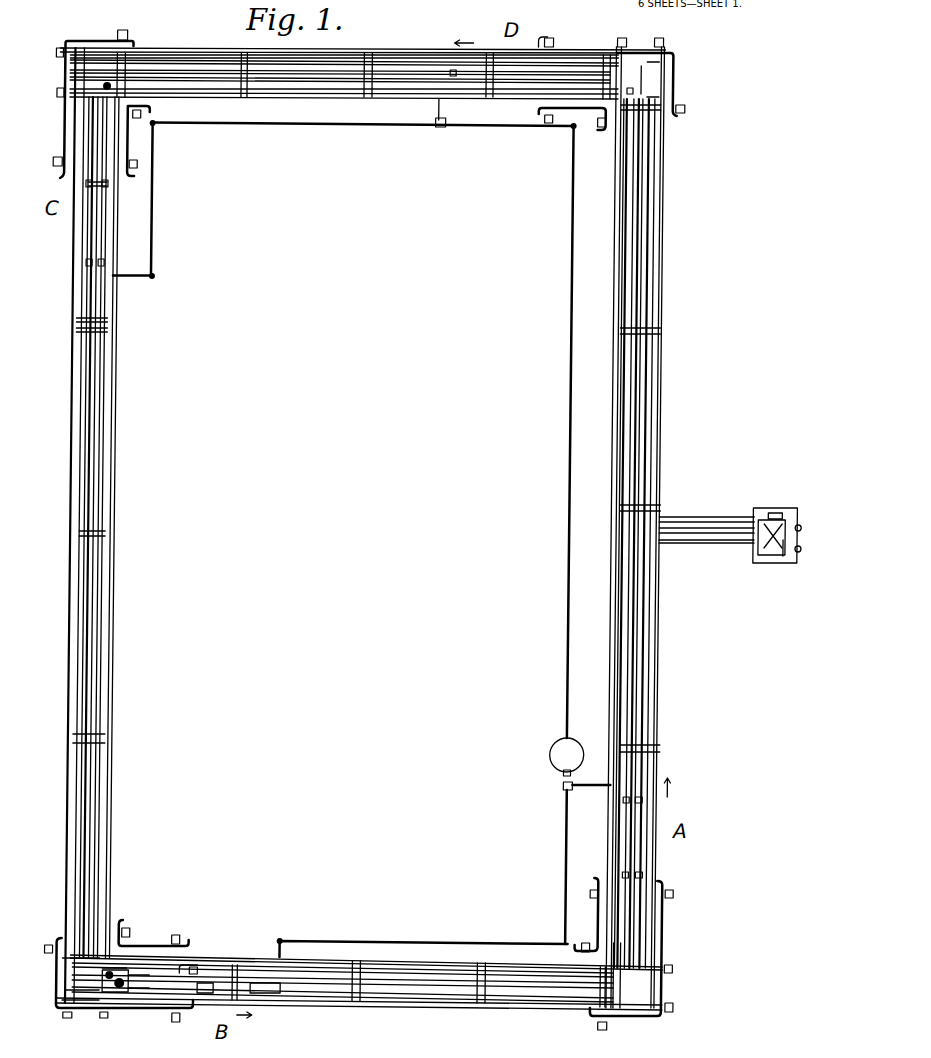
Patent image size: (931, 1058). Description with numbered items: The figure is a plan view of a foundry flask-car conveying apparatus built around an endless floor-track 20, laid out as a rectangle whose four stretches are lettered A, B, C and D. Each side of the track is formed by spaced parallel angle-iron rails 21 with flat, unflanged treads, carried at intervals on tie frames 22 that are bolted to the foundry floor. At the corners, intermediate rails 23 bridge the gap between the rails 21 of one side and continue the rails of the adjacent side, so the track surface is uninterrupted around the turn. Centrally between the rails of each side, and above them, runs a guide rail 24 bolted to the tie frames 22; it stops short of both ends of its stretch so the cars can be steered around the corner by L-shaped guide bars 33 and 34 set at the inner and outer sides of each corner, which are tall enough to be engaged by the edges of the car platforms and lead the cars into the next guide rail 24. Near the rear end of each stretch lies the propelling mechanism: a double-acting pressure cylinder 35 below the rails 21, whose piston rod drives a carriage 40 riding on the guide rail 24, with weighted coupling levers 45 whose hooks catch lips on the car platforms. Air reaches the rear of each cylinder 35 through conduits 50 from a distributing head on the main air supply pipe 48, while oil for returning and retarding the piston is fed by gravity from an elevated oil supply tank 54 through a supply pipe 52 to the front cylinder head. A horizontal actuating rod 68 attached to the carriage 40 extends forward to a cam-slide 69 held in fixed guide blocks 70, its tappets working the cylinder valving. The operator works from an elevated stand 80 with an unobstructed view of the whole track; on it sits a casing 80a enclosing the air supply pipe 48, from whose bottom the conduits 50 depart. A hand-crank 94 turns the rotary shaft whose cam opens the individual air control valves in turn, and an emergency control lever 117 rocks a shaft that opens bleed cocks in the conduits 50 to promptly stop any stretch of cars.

The endless floor-track 20 is at (123, 721).
The track rails 21 is at (394, 100).
The tie frames 22 is at (109, 533).
The intermediate rails 23 is at (649, 97).
The guide rail 24 is at (645, 456).
The inner L-shaped guide bar 33 is at (136, 143).
The outer L-shaped guide bar 34 is at (68, 123).
The double-acting pressure cylinder 35 is at (532, 66).
The carriage 40 is at (149, 993).
The coupling levers 45 is at (121, 968).
The main air supply pipe 48 is at (802, 510).
The conduits 50 is at (379, 972).
The oil supply pipe 52 is at (493, 129).
The oil supply tank 54 is at (570, 763).
The actuating rod 68 is at (169, 993).
The cam-slide 69 is at (234, 993).
The guide blocks 70 is at (276, 992).
The operator's stand 80 is at (763, 557).
The casing 80a is at (780, 552).
The hand-crank 94 is at (789, 566).
The control lever 117 is at (778, 513).